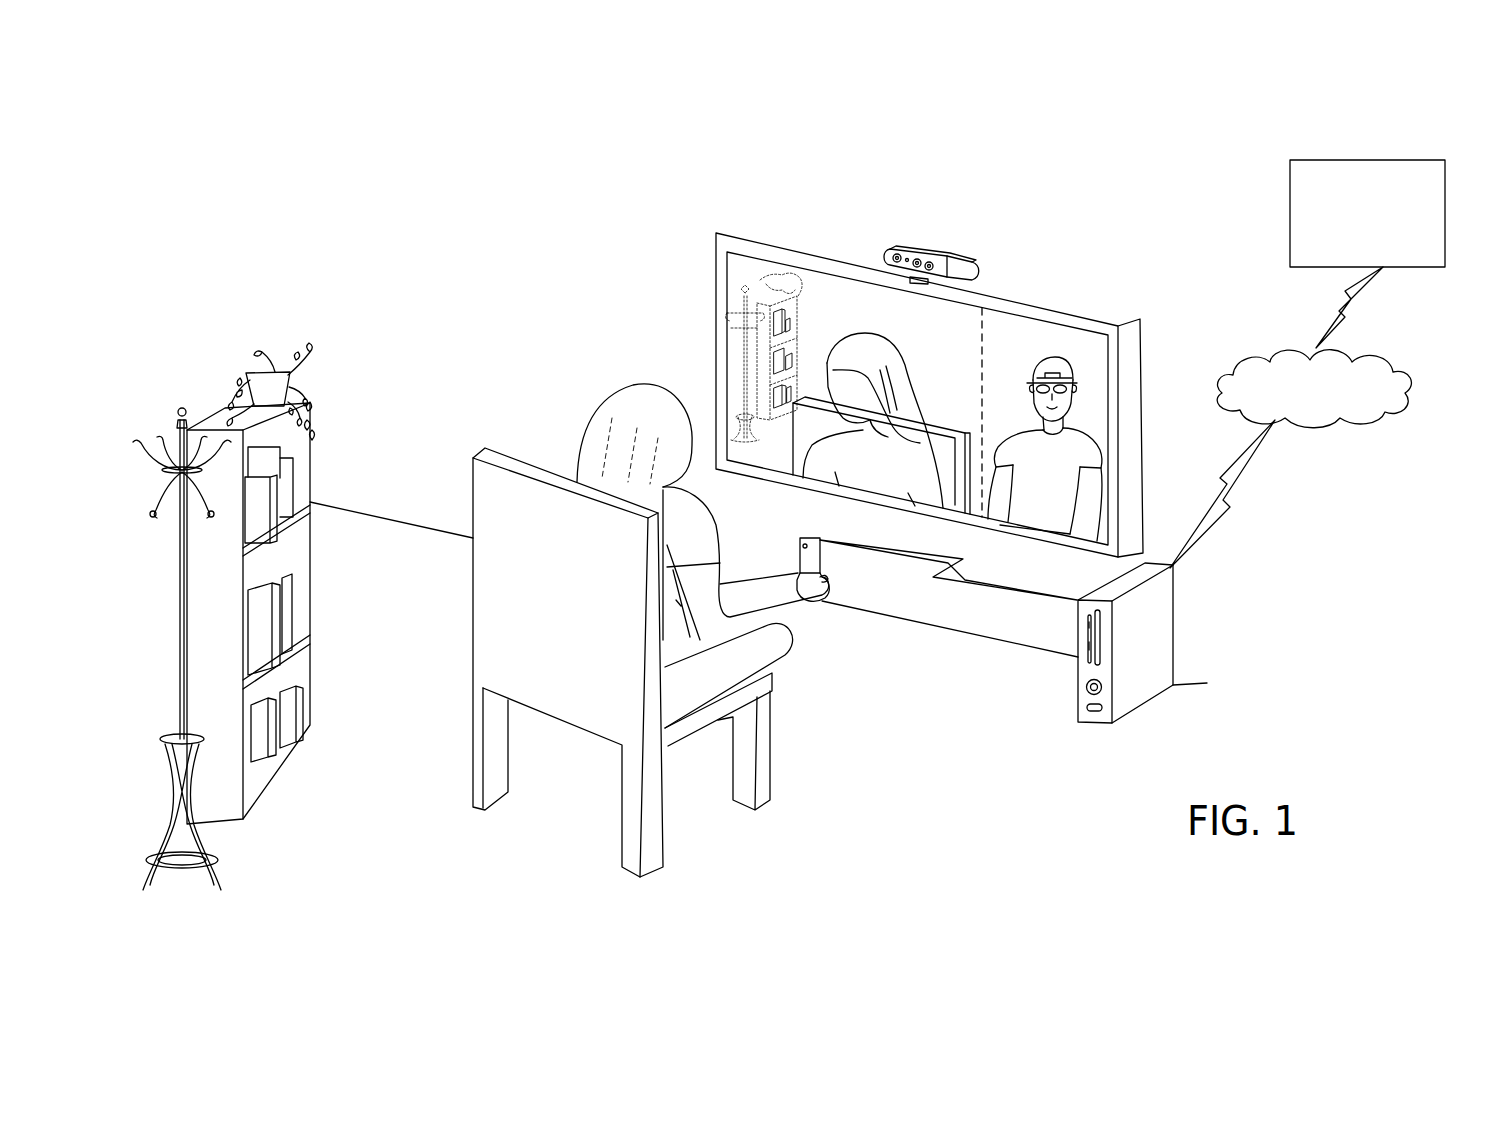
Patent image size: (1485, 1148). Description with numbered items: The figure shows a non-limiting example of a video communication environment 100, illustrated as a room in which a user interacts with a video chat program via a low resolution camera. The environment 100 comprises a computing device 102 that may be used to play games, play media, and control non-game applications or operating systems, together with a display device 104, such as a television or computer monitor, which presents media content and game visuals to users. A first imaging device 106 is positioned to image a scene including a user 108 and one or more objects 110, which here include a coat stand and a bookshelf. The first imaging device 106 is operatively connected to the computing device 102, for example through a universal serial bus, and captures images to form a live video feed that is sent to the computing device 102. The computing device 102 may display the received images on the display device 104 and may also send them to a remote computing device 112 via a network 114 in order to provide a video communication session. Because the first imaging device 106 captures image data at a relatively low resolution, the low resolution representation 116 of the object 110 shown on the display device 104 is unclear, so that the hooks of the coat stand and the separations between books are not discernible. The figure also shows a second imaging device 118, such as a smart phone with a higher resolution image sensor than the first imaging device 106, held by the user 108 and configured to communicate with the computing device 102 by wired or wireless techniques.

The video communication environment 100 is at (316, 107).
The computing device 102 is at (1173, 627).
The display device 104 is at (1061, 283).
The first imaging device 106 is at (953, 261).
The user 108 is at (586, 376).
The objects 110 is at (322, 312).
The remote computing device 112 is at (1367, 213).
The network 114 is at (1314, 389).
The low resolution representation 116 is at (737, 271).
The second imaging device 118 is at (800, 540).